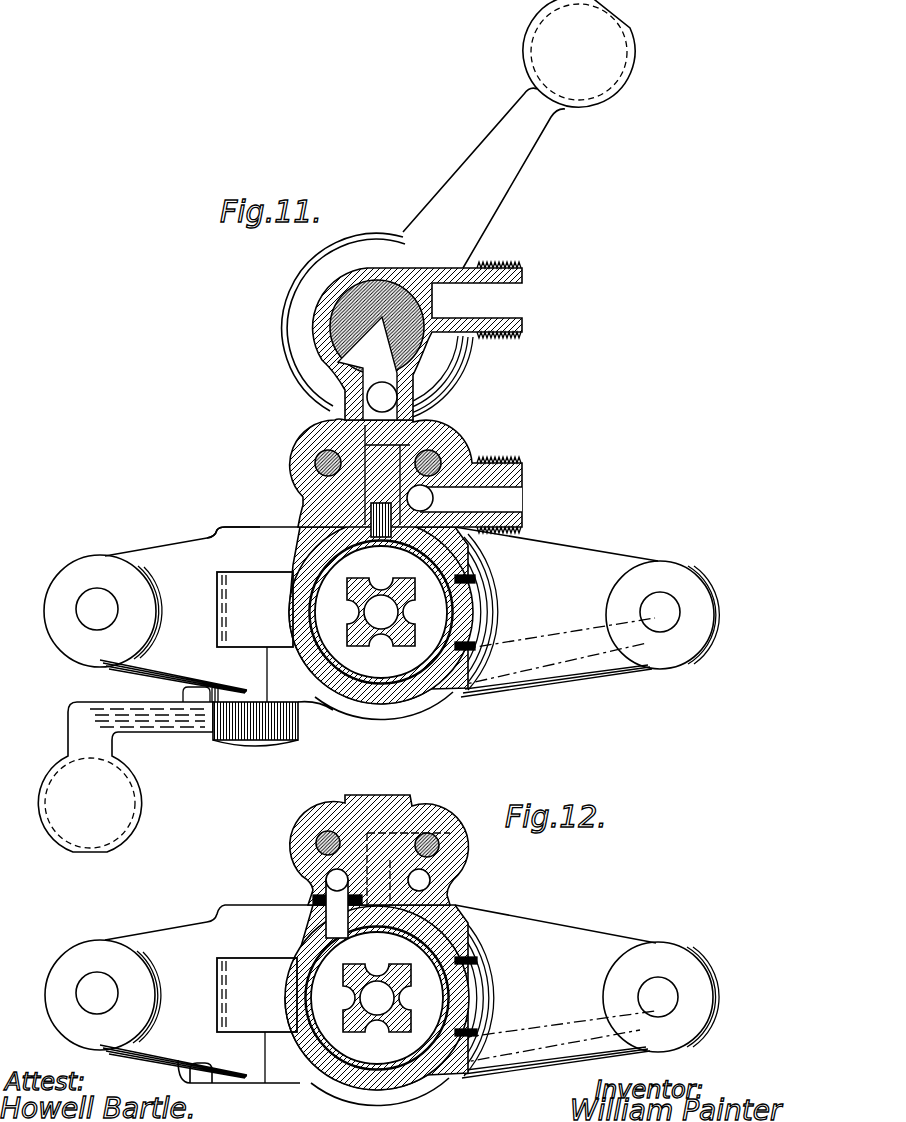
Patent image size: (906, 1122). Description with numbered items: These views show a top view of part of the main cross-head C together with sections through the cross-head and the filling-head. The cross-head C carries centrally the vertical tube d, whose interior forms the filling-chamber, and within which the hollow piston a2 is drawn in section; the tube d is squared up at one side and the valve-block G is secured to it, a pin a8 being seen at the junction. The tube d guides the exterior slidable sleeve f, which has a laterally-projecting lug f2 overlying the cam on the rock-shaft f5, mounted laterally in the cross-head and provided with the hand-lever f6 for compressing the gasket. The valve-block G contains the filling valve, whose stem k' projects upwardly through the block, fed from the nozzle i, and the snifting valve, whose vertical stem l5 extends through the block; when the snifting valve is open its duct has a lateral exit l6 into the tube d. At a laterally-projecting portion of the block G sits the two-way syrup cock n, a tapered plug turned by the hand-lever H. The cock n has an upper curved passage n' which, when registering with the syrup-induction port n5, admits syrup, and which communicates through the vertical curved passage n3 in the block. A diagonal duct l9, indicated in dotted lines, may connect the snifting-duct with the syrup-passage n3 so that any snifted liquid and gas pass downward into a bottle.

In FIG. 11, the hand-lever H is at (458, 209).
In FIG. 11, the two-way cock n is at (333, 327).
In FIG. 11, the upper passage n' is at (320, 368).
In FIG. 11, the syrup-induction port n5 is at (512, 298).
In FIG. 11, the vertical curved passage n3 is at (413, 397).
In FIG. 11, the diagonal duct l9 is at (373, 437).
In FIG. 11, the vertical stem l5 is at (318, 460).
In FIG. 12, the vertical stem l5 is at (318, 840).
In FIG. 11, the valve-block G is at (406, 465).
In FIG. 12, the valve-block G is at (379, 839).
In FIG. 11, the stem k' is at (463, 445).
In FIG. 12, the stem k' is at (456, 862).
In FIG. 11, the nozzle i is at (508, 498).
In FIG. 11, the rock-shaft f5 is at (247, 520).
In FIG. 11, the vertical tube d is at (297, 557).
In FIG. 12, the vertical tube d is at (305, 935).
In FIG. 11, the laterally-projecting lug f2 is at (255, 609).
In FIG. 12, the laterally-projecting lug f2 is at (257, 995).
In FIG. 11, the pin a8 is at (380, 537).
In FIG. 11, the shaft a2 is at (381, 612).
In FIG. 12, the shaft a2 is at (377, 998).
In FIG. 11, the cross-head C is at (381, 614).
In FIG. 12, the cross-head C is at (382, 994).
In FIG. 11, the slidable sleeve f is at (400, 703).
In FIG. 12, the slidable sleeve f is at (307, 1050).
In FIG. 11, the hand-lever f6 is at (168, 777).
In FIG. 12, the lateral exit l6 is at (320, 893).